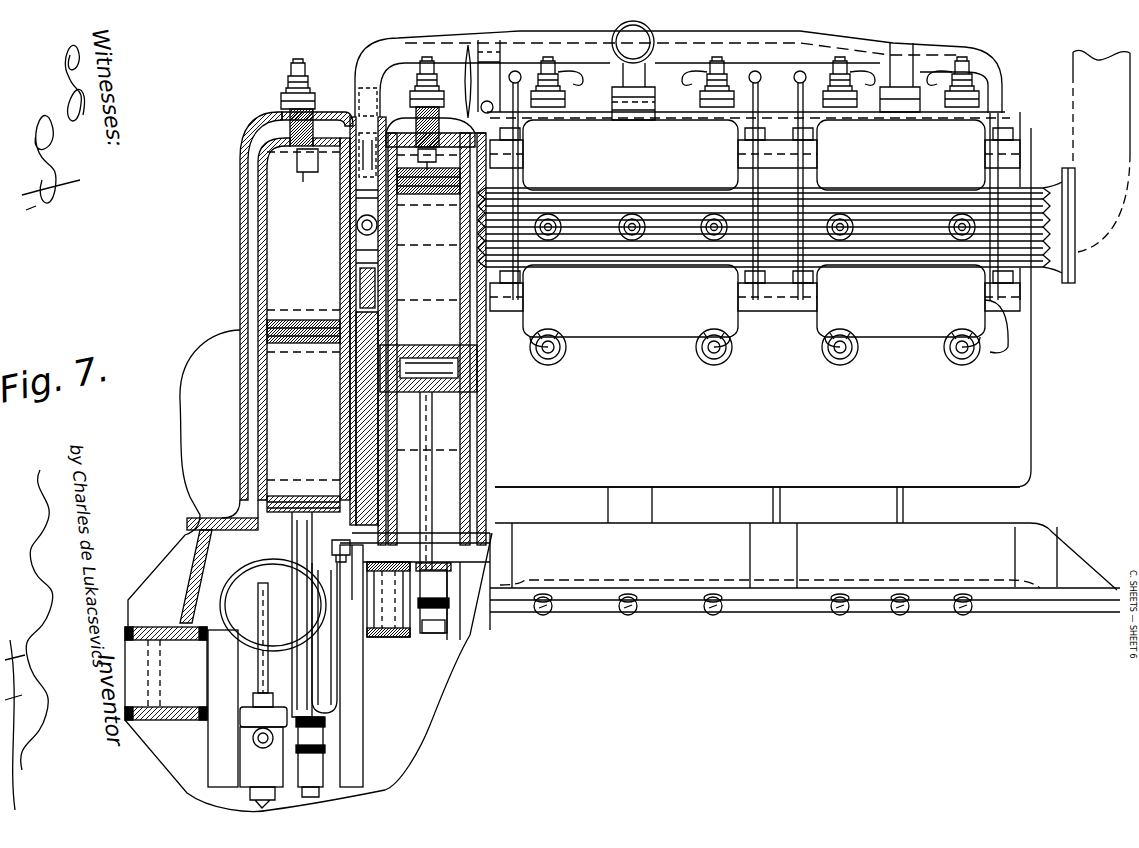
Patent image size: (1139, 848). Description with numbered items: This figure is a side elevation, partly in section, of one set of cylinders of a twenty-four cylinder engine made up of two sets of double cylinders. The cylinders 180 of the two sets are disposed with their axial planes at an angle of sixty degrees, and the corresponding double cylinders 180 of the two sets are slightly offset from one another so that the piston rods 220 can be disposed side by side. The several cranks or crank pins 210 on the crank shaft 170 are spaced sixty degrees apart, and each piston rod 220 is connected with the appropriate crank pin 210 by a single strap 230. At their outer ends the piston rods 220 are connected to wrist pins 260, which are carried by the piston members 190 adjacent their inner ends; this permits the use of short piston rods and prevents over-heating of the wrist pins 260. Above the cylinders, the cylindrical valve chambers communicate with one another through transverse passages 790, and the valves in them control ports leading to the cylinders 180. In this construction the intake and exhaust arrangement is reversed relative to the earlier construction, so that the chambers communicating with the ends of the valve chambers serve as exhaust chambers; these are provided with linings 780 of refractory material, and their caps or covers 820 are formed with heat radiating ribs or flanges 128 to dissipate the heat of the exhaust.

The heat radiating ribs or flanges 128 is at (899, 208).
The crank shaft 170 is at (140, 693).
The cylinders 180 is at (258, 236).
The pistons 190 is at (275, 413).
The crank pin 210 is at (388, 565).
The piston rods 220 is at (431, 472).
The strap 230 is at (324, 722).
The wrist pins 260 is at (406, 393).
The linings 780 is at (1076, 259).
The transverse passages 790 is at (360, 146).
The caps or covers 820 is at (651, 203).